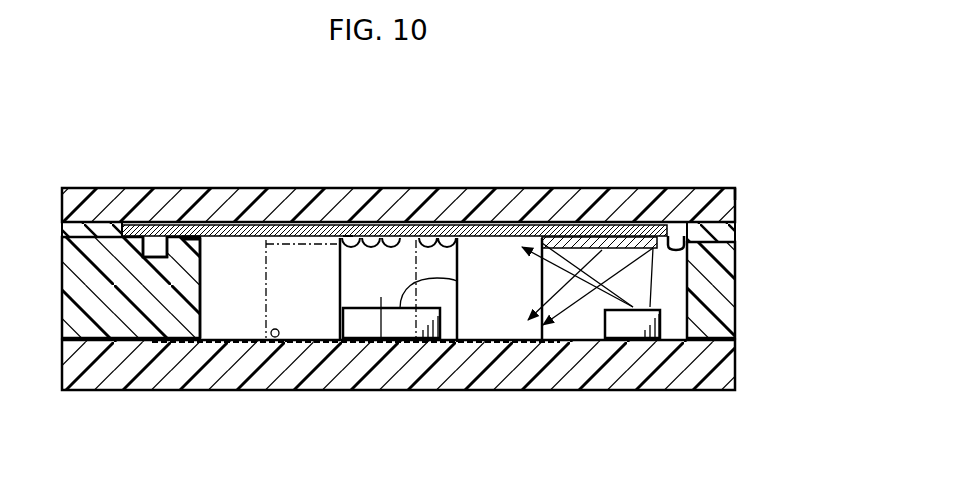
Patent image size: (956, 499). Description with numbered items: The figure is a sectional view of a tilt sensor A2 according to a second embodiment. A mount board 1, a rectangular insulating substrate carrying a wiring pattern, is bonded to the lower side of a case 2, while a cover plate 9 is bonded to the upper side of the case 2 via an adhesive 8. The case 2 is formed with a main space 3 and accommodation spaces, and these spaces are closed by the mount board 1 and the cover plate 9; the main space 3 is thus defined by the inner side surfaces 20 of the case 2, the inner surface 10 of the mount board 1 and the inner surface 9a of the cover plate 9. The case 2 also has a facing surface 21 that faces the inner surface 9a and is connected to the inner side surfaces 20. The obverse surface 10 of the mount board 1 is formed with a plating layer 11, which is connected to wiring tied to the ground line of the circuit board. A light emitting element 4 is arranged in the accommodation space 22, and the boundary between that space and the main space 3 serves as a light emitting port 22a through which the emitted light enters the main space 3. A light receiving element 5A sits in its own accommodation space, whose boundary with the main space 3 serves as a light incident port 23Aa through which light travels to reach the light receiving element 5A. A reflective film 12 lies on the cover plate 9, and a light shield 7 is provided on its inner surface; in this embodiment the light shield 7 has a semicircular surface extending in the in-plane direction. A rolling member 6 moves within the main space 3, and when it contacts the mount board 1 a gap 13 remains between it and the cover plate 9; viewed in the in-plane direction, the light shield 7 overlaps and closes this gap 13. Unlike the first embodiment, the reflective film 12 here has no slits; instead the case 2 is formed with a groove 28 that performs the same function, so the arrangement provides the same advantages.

The mount board 1 is at (731, 374).
The case 2 is at (82, 284).
The main space 3 is at (309, 252).
The light emitting element 4 is at (638, 341).
The light receiving element 5A is at (428, 344).
The rolling member 6 is at (266, 238).
The light shield 7 is at (343, 235).
The adhesive 8 is at (62, 218).
The cover plate 9 is at (110, 215).
The inner surface of the cover plate 9a is at (397, 232).
The obverse surface of the mount board 10 is at (275, 337).
The plating layer 11 is at (548, 344).
The reflective film 12 is at (443, 237).
The gap 13 is at (374, 239).
The inner side surfaces of the case 20 is at (228, 296).
The facing surface 21 is at (185, 230).
The accommodation space 22 is at (678, 310).
The light emitting port 22a is at (521, 244).
The light incident port 23Aa is at (382, 340).
The groove 28 is at (143, 243).
The tilt sensor A2 is at (741, 190).